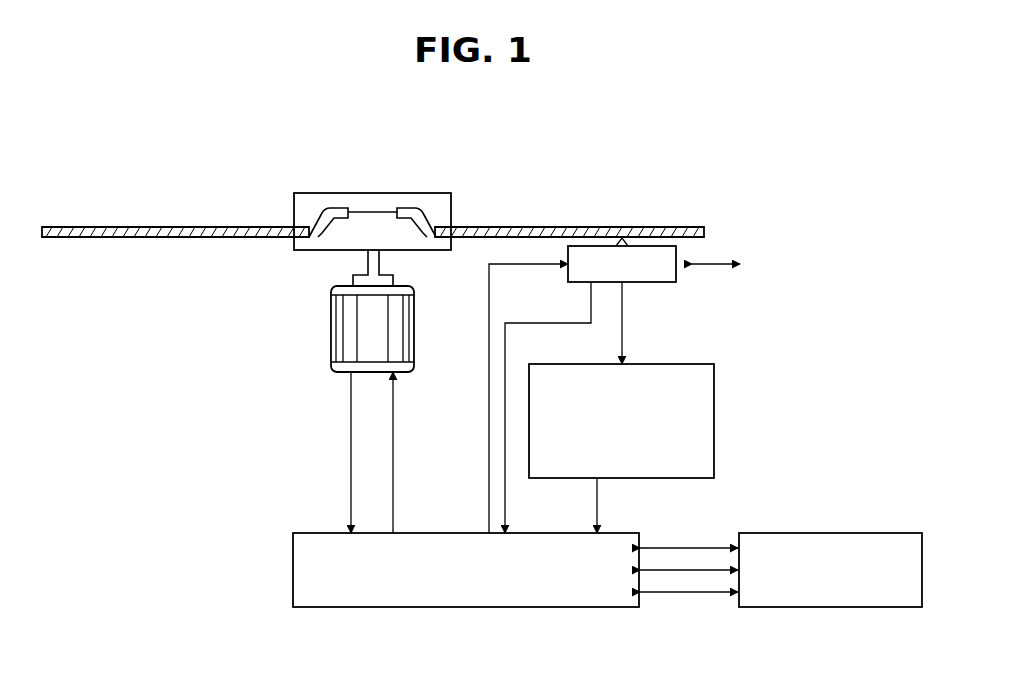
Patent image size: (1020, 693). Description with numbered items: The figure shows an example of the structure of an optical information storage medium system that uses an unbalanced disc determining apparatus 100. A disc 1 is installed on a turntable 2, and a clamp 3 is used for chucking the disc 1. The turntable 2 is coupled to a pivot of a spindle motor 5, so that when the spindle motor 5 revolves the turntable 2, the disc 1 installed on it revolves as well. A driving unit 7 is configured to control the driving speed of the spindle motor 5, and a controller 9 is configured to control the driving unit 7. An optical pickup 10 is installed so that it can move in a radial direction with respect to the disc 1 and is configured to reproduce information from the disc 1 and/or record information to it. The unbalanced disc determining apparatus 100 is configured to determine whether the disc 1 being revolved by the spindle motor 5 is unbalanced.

The disc 1 is at (672, 228).
The turntable 2 is at (312, 249).
The clamp 3 is at (421, 193).
The spindle motor 5 is at (335, 330).
The driving unit 7 is at (466, 608).
The controller 9 is at (830, 608).
The optical pickup 10 is at (651, 283).
The unbalanced disc determining apparatus 100 is at (714, 420).